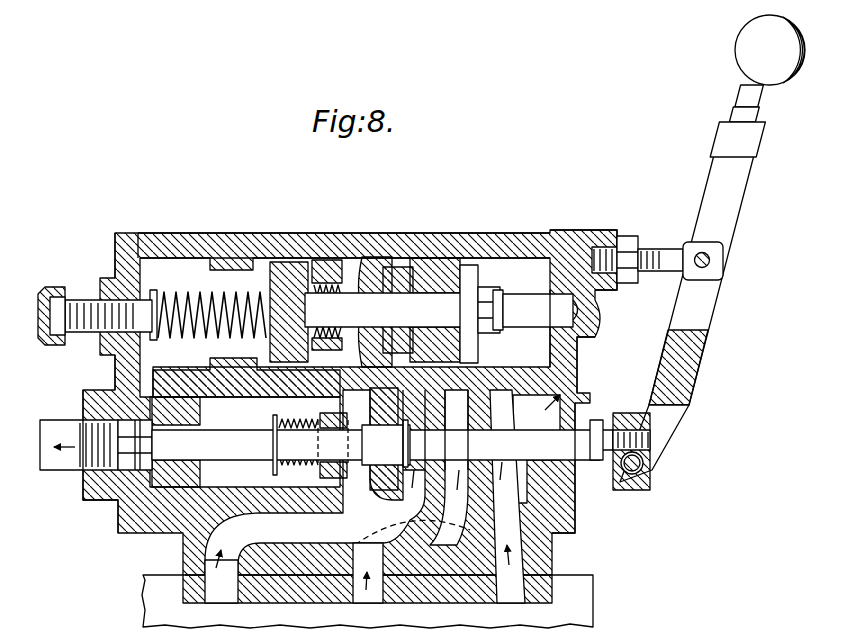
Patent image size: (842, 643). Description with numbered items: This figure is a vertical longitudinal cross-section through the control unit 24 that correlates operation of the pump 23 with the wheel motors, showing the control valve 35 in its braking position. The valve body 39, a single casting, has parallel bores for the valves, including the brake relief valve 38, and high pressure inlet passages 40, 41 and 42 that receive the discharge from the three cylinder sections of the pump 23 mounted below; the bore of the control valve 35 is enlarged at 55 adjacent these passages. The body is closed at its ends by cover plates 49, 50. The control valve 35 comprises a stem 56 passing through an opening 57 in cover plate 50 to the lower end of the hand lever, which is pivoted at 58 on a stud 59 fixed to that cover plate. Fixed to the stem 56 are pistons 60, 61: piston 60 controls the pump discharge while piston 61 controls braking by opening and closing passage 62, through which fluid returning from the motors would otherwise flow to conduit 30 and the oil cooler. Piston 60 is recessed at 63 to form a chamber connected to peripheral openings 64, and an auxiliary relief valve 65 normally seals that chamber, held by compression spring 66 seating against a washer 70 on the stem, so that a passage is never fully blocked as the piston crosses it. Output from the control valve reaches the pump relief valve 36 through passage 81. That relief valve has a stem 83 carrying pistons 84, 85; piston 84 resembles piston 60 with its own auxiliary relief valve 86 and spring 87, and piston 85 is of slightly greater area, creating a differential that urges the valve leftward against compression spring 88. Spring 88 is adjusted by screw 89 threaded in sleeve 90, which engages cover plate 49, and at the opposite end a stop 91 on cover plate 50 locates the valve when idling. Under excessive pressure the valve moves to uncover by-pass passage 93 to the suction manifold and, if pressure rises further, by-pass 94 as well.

The pump 23 is at (157, 602).
The control unit 24 is at (235, 230).
The conduit 30 is at (52, 470).
The control valve 35 is at (560, 490).
The pump relief valve 36 is at (470, 275).
The brake or motor relief valve 38 is at (740, 45).
The body 39 is at (353, 233).
The high pressure inlet passage 40 is at (213, 558).
The high pressure inlet passage 41 is at (355, 590).
The high pressure inlet passage 42 is at (540, 548).
The cover plate 49 is at (128, 238).
The cover plate 50 is at (580, 238).
The enlarged bore portion 55 is at (470, 390).
The valve stem 56 is at (580, 383).
The opening 57 is at (625, 415).
The pivot 58 is at (712, 262).
The stud 59 is at (667, 250).
The piston 60 is at (384, 392).
The piston 61 is at (198, 423).
The passage 62 is at (157, 533).
The chamber 63 is at (340, 418).
The openings 64 is at (363, 488).
The auxiliary relief valve 65 is at (340, 477).
The compression spring 66 is at (283, 472).
The washer 70 is at (276, 445).
The passage 81 is at (345, 380).
The stem 83 is at (420, 305).
The piston 84 is at (446, 276).
The piston 85 is at (293, 262).
The auxiliary relief valve 86 is at (372, 272).
The compression spring 87 is at (334, 290).
The compression spring 88 is at (208, 300).
The adjustable screw 89 is at (80, 302).
The sleeve 90 is at (75, 340).
The stop 91 is at (518, 303).
The by-pass passage 93 is at (537, 377).
The by-pass 94 is at (147, 397).